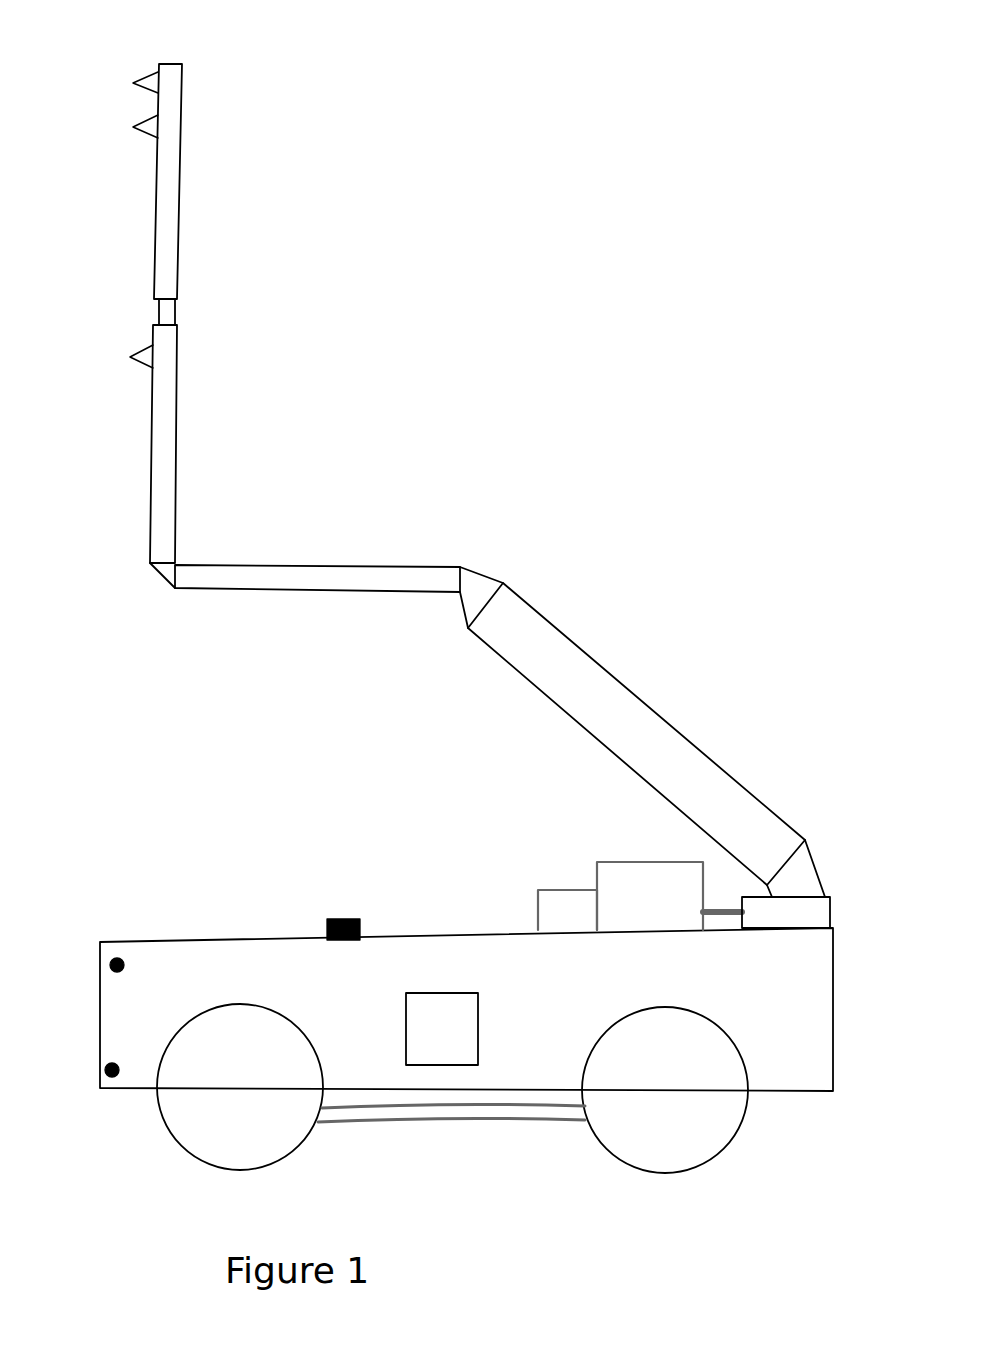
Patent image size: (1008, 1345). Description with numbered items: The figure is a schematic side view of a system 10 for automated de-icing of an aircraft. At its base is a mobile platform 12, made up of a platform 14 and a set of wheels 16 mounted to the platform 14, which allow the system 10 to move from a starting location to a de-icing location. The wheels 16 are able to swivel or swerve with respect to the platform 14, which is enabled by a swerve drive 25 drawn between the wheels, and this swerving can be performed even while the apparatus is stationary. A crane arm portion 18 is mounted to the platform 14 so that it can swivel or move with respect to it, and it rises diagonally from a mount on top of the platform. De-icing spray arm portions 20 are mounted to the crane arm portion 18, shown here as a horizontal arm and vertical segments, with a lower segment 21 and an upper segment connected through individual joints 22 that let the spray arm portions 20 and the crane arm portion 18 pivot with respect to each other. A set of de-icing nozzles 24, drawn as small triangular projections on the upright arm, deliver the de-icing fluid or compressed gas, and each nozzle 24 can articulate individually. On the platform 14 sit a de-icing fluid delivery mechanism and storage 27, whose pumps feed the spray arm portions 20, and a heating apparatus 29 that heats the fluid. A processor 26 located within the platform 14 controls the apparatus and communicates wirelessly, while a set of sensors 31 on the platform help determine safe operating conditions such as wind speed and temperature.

The system 10 is at (545, 396).
The mobile platform 12 is at (72, 912).
The platform 14 is at (805, 1000).
The wheels 16 is at (452, 1088).
The crane arm portion 18 is at (605, 700).
The de-icing spray arm portions 20 is at (172, 165).
The lower post segment 21 is at (170, 445).
The joints 22 is at (165, 315).
The de-icing nozzles 24 is at (145, 80).
The swerve drive 25 is at (437, 1090).
The processor 26 is at (442, 1029).
The de-icing fluid delivery mechanism and storage 27 is at (669, 896).
The heating apparatus 29 is at (567, 910).
The sensors 31 is at (122, 960).